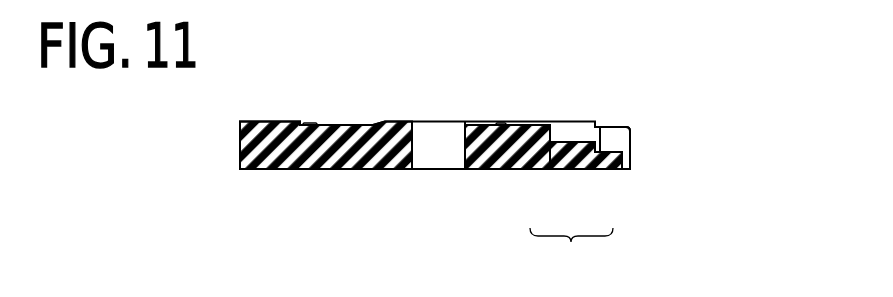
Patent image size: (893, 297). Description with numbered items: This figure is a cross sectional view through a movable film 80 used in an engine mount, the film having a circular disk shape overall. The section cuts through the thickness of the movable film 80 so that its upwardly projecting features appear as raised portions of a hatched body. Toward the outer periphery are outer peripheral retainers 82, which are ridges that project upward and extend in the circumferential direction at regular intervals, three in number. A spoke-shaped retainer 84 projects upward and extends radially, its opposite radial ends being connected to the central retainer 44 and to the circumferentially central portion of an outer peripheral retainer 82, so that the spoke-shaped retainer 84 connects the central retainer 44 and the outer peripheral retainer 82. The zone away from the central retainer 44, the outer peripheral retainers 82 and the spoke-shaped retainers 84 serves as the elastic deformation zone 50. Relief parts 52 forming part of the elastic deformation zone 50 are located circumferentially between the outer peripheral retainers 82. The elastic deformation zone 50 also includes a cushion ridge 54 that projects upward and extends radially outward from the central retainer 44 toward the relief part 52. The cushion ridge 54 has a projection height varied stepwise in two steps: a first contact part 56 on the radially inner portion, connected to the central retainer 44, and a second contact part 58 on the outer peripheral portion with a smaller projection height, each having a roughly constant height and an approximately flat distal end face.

The movable film 80 is at (696, 96).
The outer peripheral retainer 82 is at (243, 138).
The spoke-shaped retainer 84 is at (337, 143).
The central retainer 44 is at (471, 130).
The elastic deformation zone 50 is at (519, 182).
The relief part 52 is at (617, 166).
The cushion ridge 54 is at (571, 248).
The first contact part 56 is at (526, 138).
The second contact part 58 is at (579, 145).